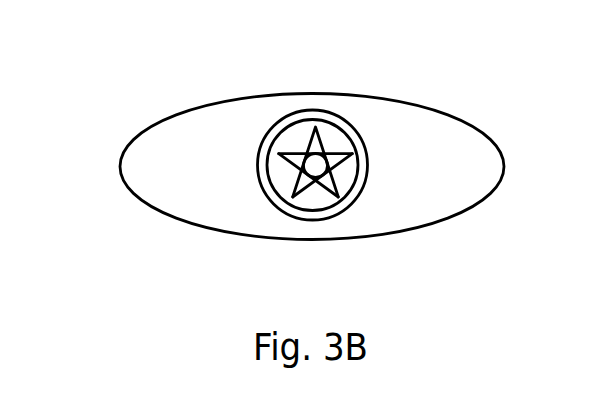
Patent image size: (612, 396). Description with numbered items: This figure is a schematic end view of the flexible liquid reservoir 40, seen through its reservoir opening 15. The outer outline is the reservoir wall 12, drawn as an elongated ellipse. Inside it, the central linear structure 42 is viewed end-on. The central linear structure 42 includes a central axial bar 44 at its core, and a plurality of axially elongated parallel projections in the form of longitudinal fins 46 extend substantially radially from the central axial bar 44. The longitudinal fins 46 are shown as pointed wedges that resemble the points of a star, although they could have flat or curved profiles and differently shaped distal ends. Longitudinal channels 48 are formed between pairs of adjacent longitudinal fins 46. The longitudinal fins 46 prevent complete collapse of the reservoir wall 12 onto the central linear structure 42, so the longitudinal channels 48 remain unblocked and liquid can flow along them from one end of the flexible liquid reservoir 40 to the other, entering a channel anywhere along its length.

The reservoir wall 12 is at (155, 210).
The reservoir opening 15 is at (362, 142).
The flexible liquid reservoir 40 is at (197, 85).
The central linear structure 42 is at (328, 143).
The central axial bar 44 is at (362, 142).
The longitudinal fins 46 is at (333, 190).
The longitudinal channels 48 is at (299, 142).